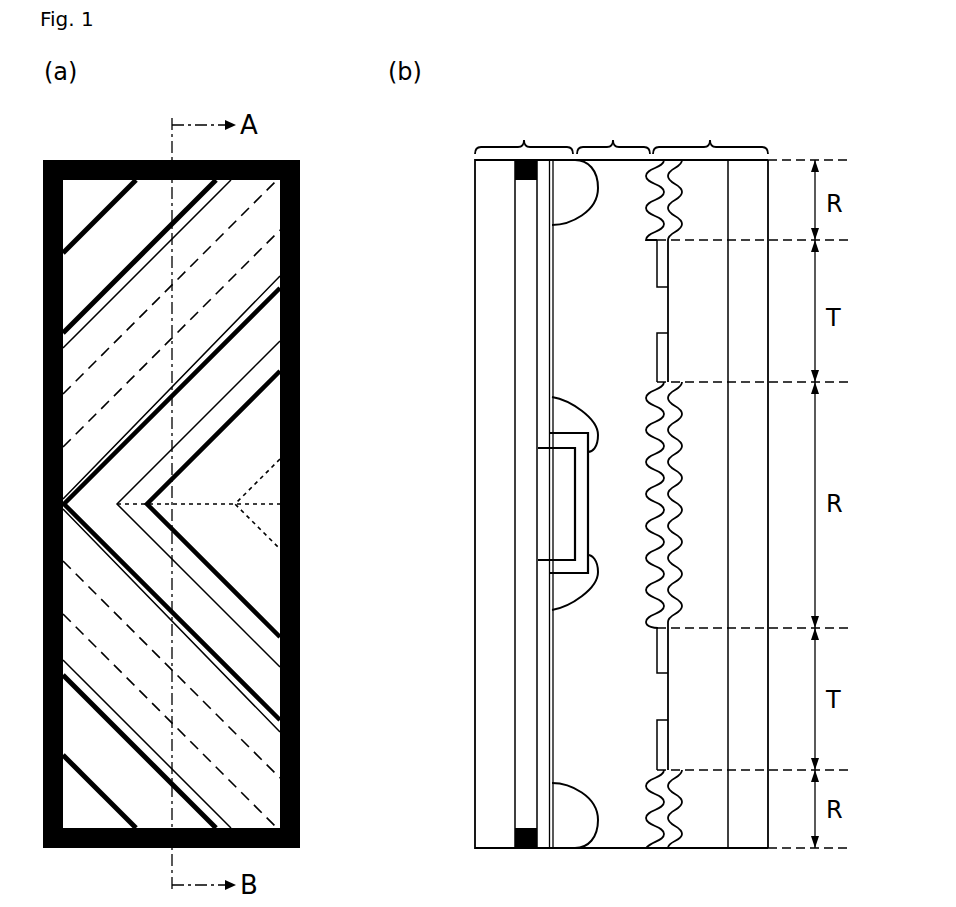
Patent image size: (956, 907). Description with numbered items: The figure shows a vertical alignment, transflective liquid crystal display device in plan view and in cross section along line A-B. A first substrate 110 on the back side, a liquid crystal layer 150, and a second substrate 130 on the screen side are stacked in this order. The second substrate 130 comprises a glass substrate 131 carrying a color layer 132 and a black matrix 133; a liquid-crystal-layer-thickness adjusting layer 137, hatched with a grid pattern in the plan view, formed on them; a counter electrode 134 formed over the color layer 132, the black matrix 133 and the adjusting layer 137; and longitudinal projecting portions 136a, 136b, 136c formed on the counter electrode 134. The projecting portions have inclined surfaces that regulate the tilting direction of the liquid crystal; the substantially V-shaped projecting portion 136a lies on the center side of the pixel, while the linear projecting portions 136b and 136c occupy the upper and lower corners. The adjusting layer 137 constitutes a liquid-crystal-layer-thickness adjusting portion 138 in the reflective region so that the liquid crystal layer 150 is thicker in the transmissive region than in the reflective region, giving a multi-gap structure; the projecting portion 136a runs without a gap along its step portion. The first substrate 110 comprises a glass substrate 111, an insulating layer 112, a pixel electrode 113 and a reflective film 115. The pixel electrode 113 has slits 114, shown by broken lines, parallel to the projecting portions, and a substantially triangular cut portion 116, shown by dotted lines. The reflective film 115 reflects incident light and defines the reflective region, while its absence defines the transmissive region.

The first substrate 110 is at (710, 131).
The glass substrate 111 is at (757, 835).
The insulating layer 112 is at (710, 835).
The pixel electrode 113 is at (671, 843).
The slits 114 is at (272, 210).
The reflective film 115 is at (657, 843).
The cut portion 116 is at (280, 500).
The second substrate 130 is at (524, 131).
The glass substrate 131 is at (481, 842).
The color layer 132 is at (528, 757).
The black matrix 133 is at (291, 698).
The counter electrode 134 is at (546, 842).
The projecting portion 136a is at (268, 324).
The projecting portion 136b is at (107, 222).
The projecting portion 136c is at (102, 787).
The liquid-crystal-layer-thickness adjusting layer 137 is at (268, 422).
The liquid-crystal-layer-thickness adjusting portion 138 is at (268, 585).
The liquid crystal layer 150 is at (613, 131).